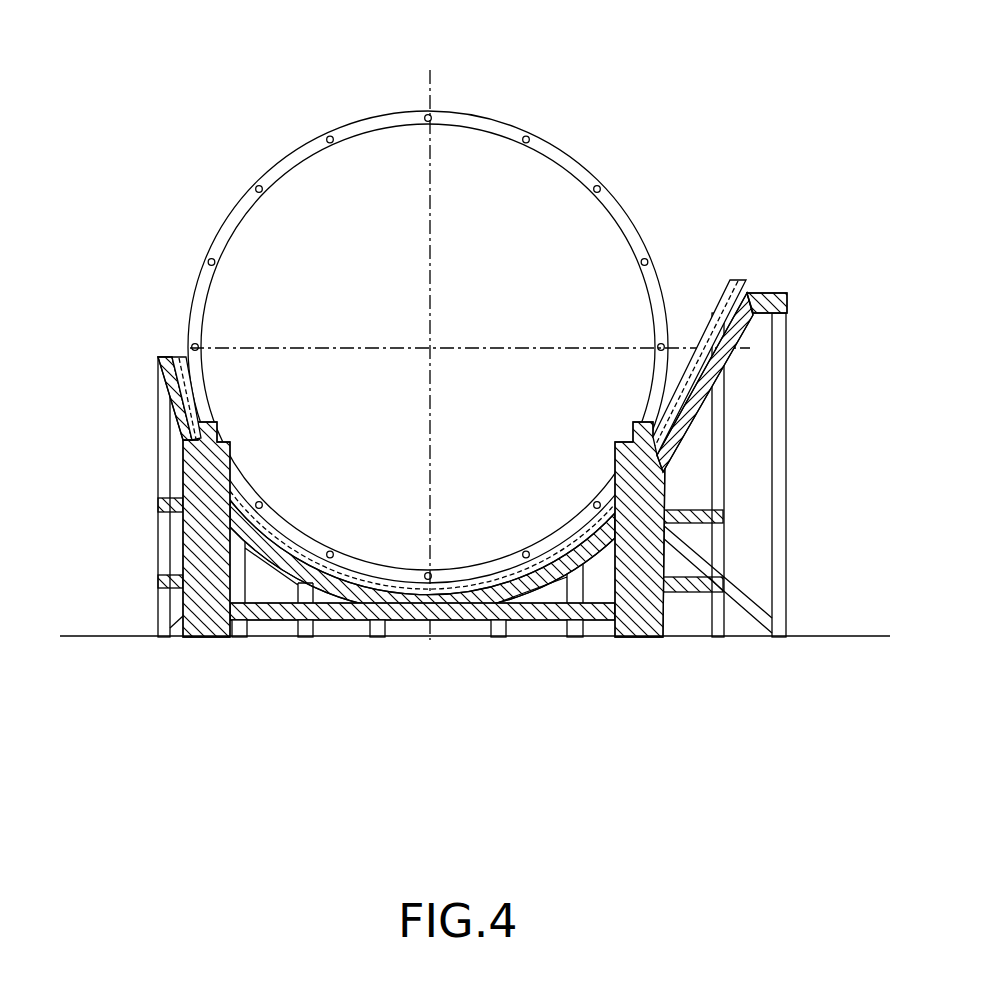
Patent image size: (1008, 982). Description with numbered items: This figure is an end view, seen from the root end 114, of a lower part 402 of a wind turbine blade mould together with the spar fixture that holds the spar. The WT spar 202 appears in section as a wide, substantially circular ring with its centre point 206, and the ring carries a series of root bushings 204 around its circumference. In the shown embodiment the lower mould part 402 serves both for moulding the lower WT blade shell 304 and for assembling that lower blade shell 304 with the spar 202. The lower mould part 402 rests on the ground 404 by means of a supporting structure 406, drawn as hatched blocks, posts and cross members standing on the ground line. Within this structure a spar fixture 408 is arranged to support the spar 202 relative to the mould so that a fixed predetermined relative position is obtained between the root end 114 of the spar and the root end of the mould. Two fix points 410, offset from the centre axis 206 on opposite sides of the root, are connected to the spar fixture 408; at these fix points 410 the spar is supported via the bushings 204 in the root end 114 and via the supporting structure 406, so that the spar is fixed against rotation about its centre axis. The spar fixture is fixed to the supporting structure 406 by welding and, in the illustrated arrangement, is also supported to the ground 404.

The root end 114 is at (502, 692).
The WT spar 202 is at (370, 116).
The root bushings 204 is at (529, 137).
The centre point 206 is at (428, 347).
The lower WT blade shell 304 is at (663, 293).
The lower part of WT blade mould 402 is at (753, 320).
The ground 404 is at (867, 639).
The supporting structure 406 is at (367, 631).
The spar fixture 408 is at (183, 490).
The fix points 410 is at (182, 420).